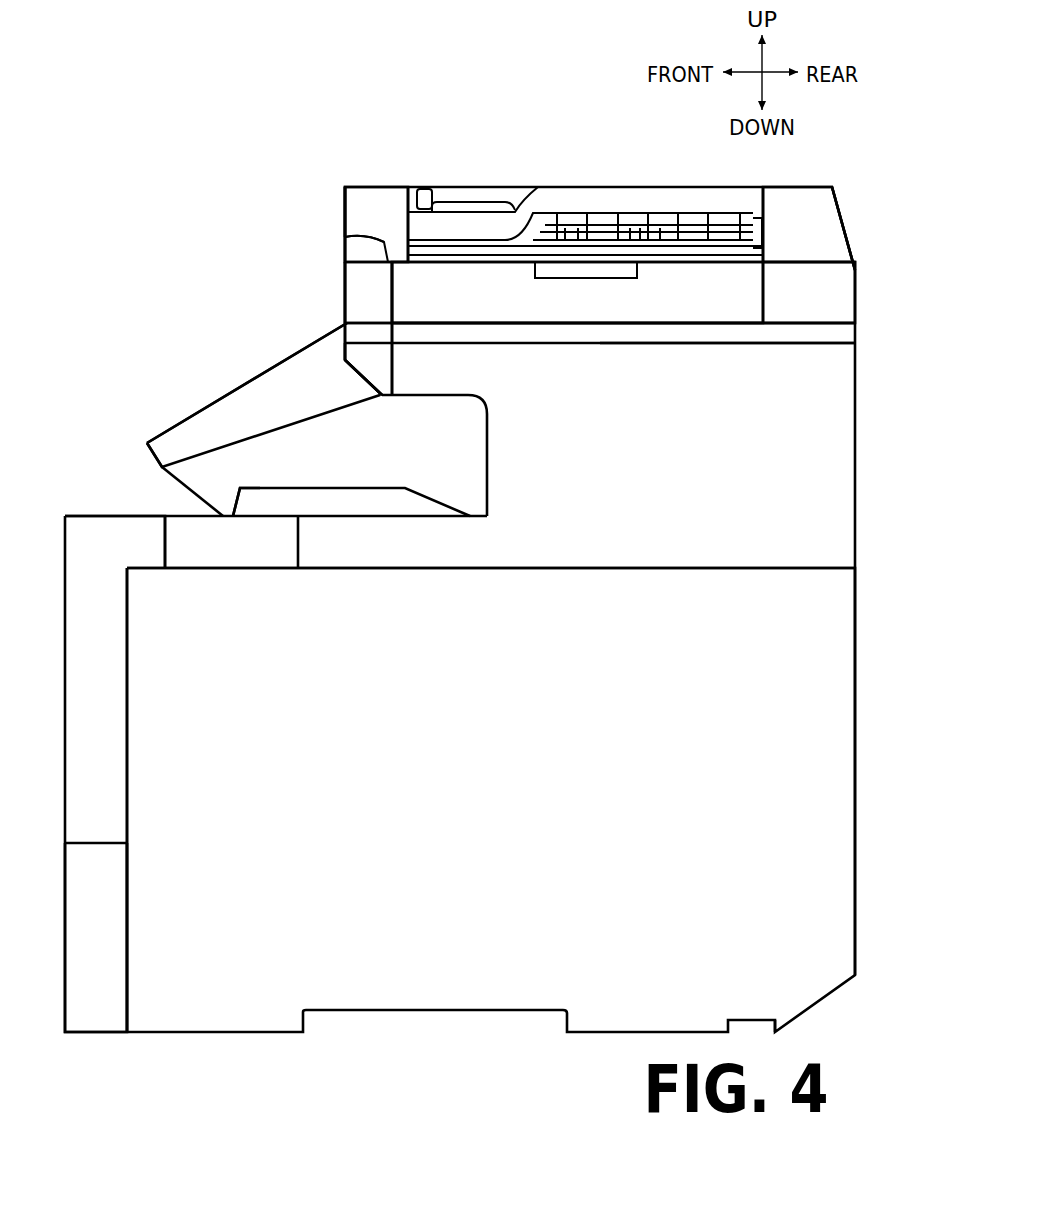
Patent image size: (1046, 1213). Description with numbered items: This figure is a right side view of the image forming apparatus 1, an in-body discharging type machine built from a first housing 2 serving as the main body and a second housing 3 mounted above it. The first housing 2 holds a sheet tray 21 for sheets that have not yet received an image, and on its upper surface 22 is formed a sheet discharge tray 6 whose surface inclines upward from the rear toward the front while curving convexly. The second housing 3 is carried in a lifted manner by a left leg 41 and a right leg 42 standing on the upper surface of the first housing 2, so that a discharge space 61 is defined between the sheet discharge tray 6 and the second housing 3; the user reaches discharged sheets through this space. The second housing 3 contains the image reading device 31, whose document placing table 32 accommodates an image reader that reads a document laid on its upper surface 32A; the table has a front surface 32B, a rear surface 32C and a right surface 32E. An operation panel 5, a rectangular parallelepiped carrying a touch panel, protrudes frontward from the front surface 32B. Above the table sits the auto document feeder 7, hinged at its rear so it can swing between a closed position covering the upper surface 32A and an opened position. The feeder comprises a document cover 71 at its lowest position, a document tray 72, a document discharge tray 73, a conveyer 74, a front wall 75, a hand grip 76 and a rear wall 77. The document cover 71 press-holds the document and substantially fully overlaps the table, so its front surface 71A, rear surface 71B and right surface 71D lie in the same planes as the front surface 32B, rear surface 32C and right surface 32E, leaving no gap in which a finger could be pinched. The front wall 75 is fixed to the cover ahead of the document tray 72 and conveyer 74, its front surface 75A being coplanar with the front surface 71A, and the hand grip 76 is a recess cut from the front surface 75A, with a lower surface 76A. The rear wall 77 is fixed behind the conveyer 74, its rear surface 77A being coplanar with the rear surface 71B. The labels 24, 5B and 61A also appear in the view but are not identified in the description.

The image forming apparatus 1 is at (116, 122).
The first housing 2 is at (94, 497).
The sheet tray 21 is at (86, 1034).
The upper surface 22 is at (119, 514).
The sheet cassette 24 is at (493, 812).
The second housing 3 is at (336, 183).
The image reading device 31 is at (343, 225).
The document placing table 32 is at (370, 337).
The upper surface 32A is at (470, 323).
The front surface 32B is at (369, 357).
The rear surface 32C is at (856, 341).
The right surface 32E is at (698, 338).
The left leg 41 is at (166, 474).
The right leg 42 is at (670, 472).
The operation panel 5 is at (223, 370).
The tray upper surface 5B is at (203, 432).
The sheet discharge tray 6 is at (332, 510).
The discharge space 61 is at (462, 462).
The guide front end 61A is at (240, 490).
The auto document feeder 7 is at (452, 184).
The document cover 71 is at (582, 300).
The front surface 71A is at (344, 307).
The rear surface 71B is at (858, 293).
The right surface 71D is at (636, 312).
The document tray 72 is at (603, 195).
The document discharge tray 73 is at (672, 262).
The conveyer 74 is at (506, 185).
The front wall 75 is at (383, 184).
The front surface 75A is at (342, 203).
The hand grip 76 is at (354, 247).
The lower surface 76A is at (359, 242).
The rear wall 77 is at (776, 185).
The rear surface 77A is at (840, 205).